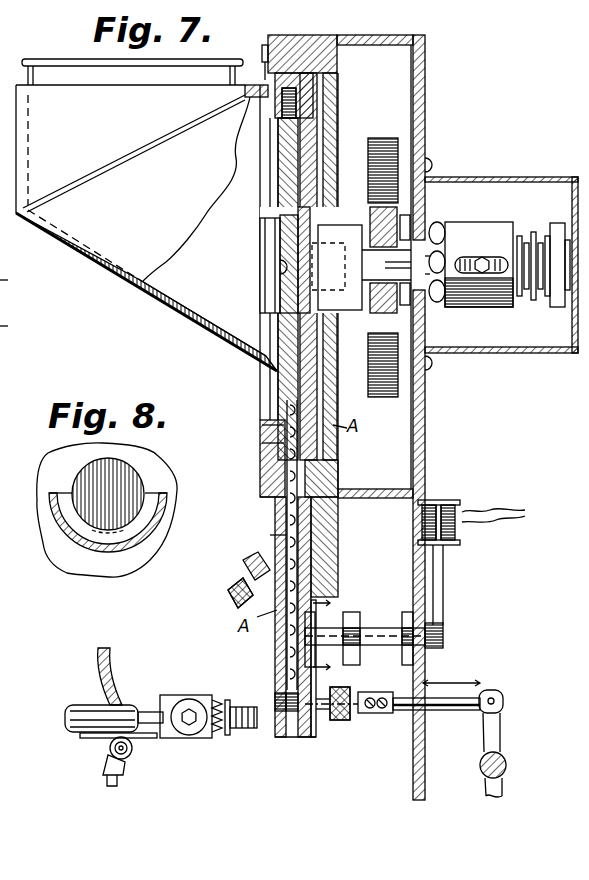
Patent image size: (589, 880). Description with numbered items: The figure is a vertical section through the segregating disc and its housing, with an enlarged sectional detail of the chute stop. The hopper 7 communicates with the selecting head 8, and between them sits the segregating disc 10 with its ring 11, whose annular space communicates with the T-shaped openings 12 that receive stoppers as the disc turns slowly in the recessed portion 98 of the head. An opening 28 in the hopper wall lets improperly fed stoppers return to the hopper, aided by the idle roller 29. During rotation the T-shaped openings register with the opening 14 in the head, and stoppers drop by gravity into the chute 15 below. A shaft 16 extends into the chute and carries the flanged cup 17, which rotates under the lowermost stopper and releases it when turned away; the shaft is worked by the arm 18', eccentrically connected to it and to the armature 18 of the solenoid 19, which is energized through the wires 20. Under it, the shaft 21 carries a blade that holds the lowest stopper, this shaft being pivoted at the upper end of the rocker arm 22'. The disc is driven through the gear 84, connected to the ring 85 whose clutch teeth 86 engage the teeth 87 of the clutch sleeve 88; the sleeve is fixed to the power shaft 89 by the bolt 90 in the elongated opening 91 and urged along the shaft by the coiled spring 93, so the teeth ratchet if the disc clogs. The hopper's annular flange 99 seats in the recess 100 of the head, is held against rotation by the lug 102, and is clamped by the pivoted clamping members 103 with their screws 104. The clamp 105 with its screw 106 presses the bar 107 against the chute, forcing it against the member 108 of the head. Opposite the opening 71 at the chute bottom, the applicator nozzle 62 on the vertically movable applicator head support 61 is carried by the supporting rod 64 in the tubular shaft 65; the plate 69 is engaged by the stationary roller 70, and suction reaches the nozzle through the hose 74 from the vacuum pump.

In FIG. 7, the hopper 7 is at (163, 295).
In FIG. 7, the selecting head 8 is at (373, 43).
In FIG. 7, the segregating disc 10 is at (270, 400).
In FIG. 7, the ring 11 is at (292, 190).
In FIG. 7, the T-shaped openings 12 is at (267, 382).
In FIG. 7, the opening 14 is at (263, 495).
In FIG. 7, the chute 15 is at (280, 525).
In FIG. 7, the shaft 16 is at (423, 647).
In FIG. 8, the shaft 16 is at (132, 472).
In FIG. 7, the flanged cup 17 is at (277, 662).
In FIG. 8, the flanged cup 17 is at (165, 511).
In FIG. 7, the armature 18 is at (456, 585).
In FIG. 7, the arm 18' is at (459, 624).
In FIG. 7, the solenoid 19 is at (450, 503).
In FIG. 7, the wires 20 is at (504, 513).
In FIG. 7, the shaft 21 is at (447, 708).
In FIG. 7, the rocker arm 22' is at (509, 743).
In FIG. 7, the opening 28 is at (263, 107).
In FIG. 7, the idle roller 29 is at (265, 117).
In FIG. 7, the applicator head support 61 is at (202, 696).
In FIG. 7, the applicator nozzle 62 is at (240, 730).
In FIG. 7, the supporting rod 64 is at (148, 711).
In FIG. 7, the tubular shaft 65 is at (77, 707).
In FIG. 7, the plate 69 is at (85, 738).
In FIG. 7, the roller 70 is at (131, 755).
In FIG. 7, the opening 71 is at (277, 728).
In FIG. 7, the hose 74 is at (112, 680).
In FIG. 7, the gear 84 is at (385, 397).
In FIG. 7, the ring 85 is at (408, 312).
In FIG. 7, the clutch teeth 86 is at (432, 228).
In FIG. 7, the teeth 87 is at (450, 255).
In FIG. 7, the clutch sleeve 88 is at (490, 224).
In FIG. 7, the power shaft 89 is at (533, 292).
In FIG. 7, the bolt 90 is at (481, 257).
In FIG. 7, the elongated opening 91 is at (497, 265).
In FIG. 7, the coiled spring 93 is at (527, 233).
In FIG. 7, the recessed portion 98 is at (267, 425).
In FIG. 7, the annular flange 99 is at (263, 443).
In FIG. 7, the recess 100 is at (270, 472).
In FIG. 7, the lug 102 is at (263, 80).
In FIG. 7, the pivoted clamping members 103 is at (18, 282).
In FIG. 7, the screws 104 is at (18, 328).
In FIG. 7, the clamp 105 is at (243, 563).
In FIG. 7, the screw 106 is at (230, 600).
In FIG. 7, the bar 107 is at (273, 535).
In FIG. 7, the member 108 is at (340, 563).